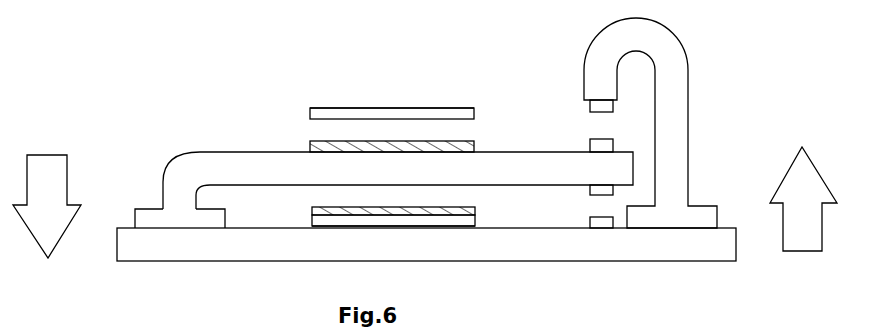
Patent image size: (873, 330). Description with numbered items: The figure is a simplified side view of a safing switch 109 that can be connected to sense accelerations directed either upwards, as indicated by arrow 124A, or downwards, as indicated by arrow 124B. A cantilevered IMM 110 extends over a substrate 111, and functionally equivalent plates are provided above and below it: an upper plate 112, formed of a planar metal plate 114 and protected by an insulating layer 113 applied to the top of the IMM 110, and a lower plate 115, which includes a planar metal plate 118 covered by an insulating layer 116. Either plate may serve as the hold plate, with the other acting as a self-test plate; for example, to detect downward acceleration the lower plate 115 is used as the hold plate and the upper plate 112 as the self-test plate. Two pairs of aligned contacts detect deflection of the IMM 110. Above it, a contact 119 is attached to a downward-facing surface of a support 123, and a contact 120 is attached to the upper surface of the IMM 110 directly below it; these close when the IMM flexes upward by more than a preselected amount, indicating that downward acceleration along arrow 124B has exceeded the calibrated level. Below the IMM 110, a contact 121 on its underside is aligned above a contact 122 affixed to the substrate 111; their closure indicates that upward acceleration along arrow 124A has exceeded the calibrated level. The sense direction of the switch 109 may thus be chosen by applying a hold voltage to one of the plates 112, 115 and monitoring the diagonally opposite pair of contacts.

The safing switch 109 is at (202, 105).
The IMM 110 is at (230, 152).
The substrate 111 is at (230, 262).
The upper plate 112 is at (476, 108).
The insulating layer 113 is at (477, 146).
The planar metal plate 114 is at (310, 109).
The lower plate 115 is at (477, 212).
The insulating layer 116 is at (335, 207).
The planar metal plate 118 is at (477, 215).
The contact 119 is at (613, 108).
The contact 120 is at (613, 141).
The contact 121 is at (613, 191).
The contact 122 is at (613, 221).
The support 123 is at (668, 26).
The arrow 124A is at (803, 228).
The arrow 124B is at (57, 172).